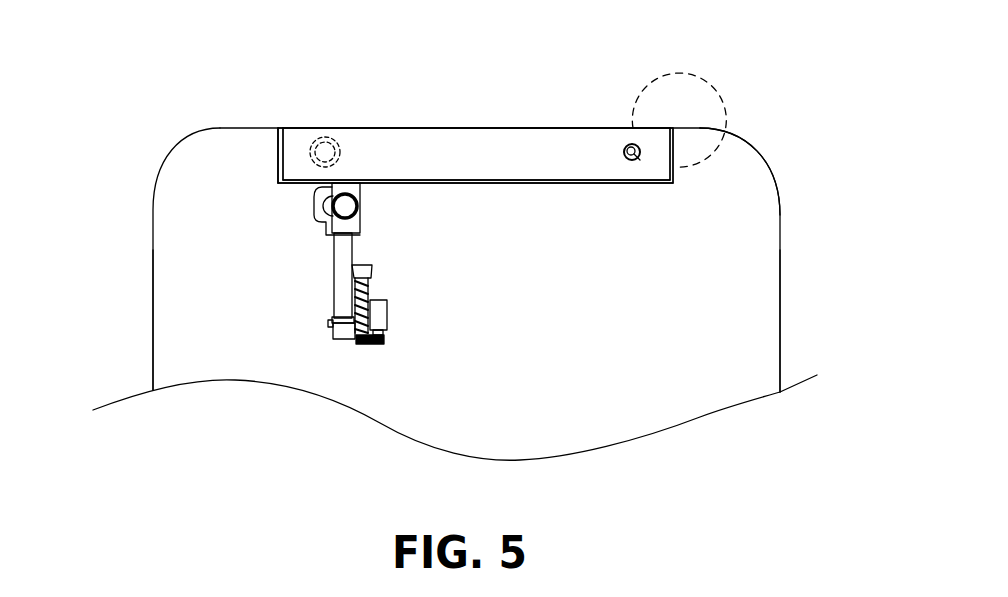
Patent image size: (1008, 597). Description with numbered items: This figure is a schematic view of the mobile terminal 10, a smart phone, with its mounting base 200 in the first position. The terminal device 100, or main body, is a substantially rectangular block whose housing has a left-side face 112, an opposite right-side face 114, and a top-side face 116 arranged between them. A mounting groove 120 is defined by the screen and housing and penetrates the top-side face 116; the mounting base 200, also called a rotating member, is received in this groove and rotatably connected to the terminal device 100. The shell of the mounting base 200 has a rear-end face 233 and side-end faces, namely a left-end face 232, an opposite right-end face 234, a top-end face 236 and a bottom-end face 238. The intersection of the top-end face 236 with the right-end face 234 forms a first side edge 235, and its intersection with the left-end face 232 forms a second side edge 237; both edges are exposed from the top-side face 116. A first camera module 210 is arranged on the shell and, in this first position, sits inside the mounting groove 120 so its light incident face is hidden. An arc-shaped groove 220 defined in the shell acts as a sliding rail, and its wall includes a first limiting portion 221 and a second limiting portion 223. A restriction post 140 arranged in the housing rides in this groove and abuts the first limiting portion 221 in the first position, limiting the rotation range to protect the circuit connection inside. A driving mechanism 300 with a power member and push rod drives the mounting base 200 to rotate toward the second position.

The mobile terminal 10 is at (158, 141).
The terminal device 100 is at (156, 263).
The left-side face 112 is at (153, 337).
The right-side face 114 is at (780, 297).
The top-side face 116 is at (699, 125).
The mounting groove 120 is at (280, 133).
The restriction post 140 is at (630, 147).
The mounting base 200 is at (348, 130).
The first camera module 210 is at (325, 150).
The arc-shaped groove 220 is at (642, 153).
The first limiting portion 221 is at (627, 148).
The second limiting portion 223 is at (626, 154).
The left-end face 232 is at (278, 160).
The rear-end face 233 is at (457, 157).
The right-end face 234 is at (678, 167).
The first side edge 235 is at (668, 127).
The top-end face 236 is at (417, 127).
The second side edge 237 is at (283, 128).
The bottom-end face 238 is at (303, 183).
The driving mechanism 300 is at (376, 344).